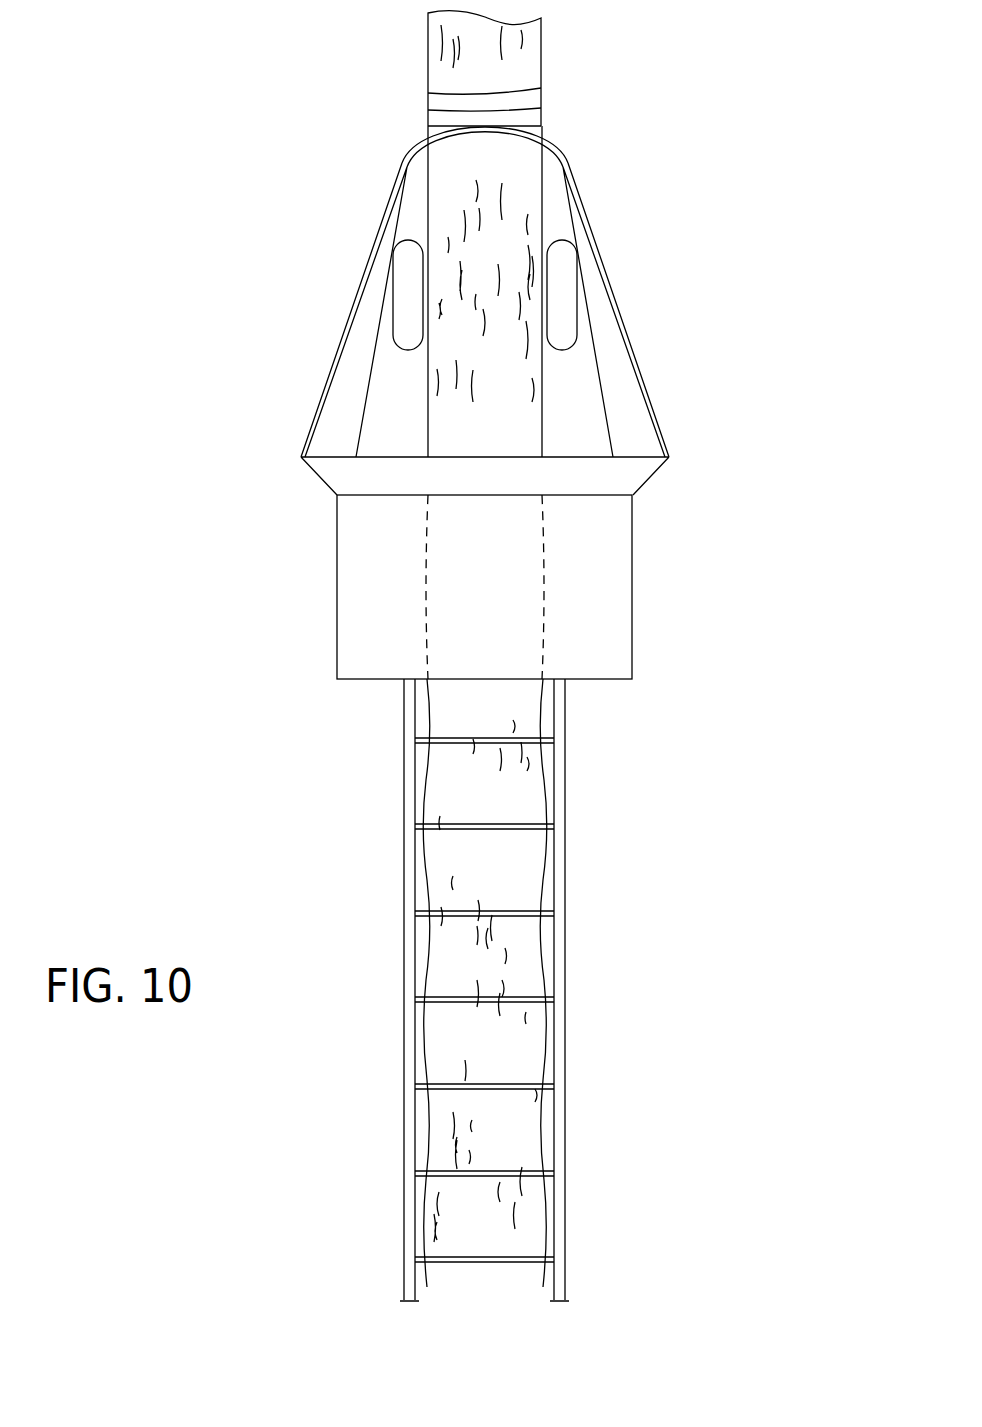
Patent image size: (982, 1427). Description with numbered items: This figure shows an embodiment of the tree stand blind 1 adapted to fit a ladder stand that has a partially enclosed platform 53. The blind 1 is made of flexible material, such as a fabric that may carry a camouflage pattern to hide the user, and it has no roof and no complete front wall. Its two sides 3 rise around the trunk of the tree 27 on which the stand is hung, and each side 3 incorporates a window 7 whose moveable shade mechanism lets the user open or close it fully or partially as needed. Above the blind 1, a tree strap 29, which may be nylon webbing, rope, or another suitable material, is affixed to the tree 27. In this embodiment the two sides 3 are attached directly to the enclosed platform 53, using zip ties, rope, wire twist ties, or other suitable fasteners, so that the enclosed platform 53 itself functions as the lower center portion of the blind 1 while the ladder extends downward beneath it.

The tree stand blind 1 is at (499, 310).
The sides 3 is at (583, 382).
The window 7 is at (562, 293).
The tree 27 is at (437, 70).
The tree strap 29 is at (528, 100).
The partially enclosed platform 53 is at (655, 593).